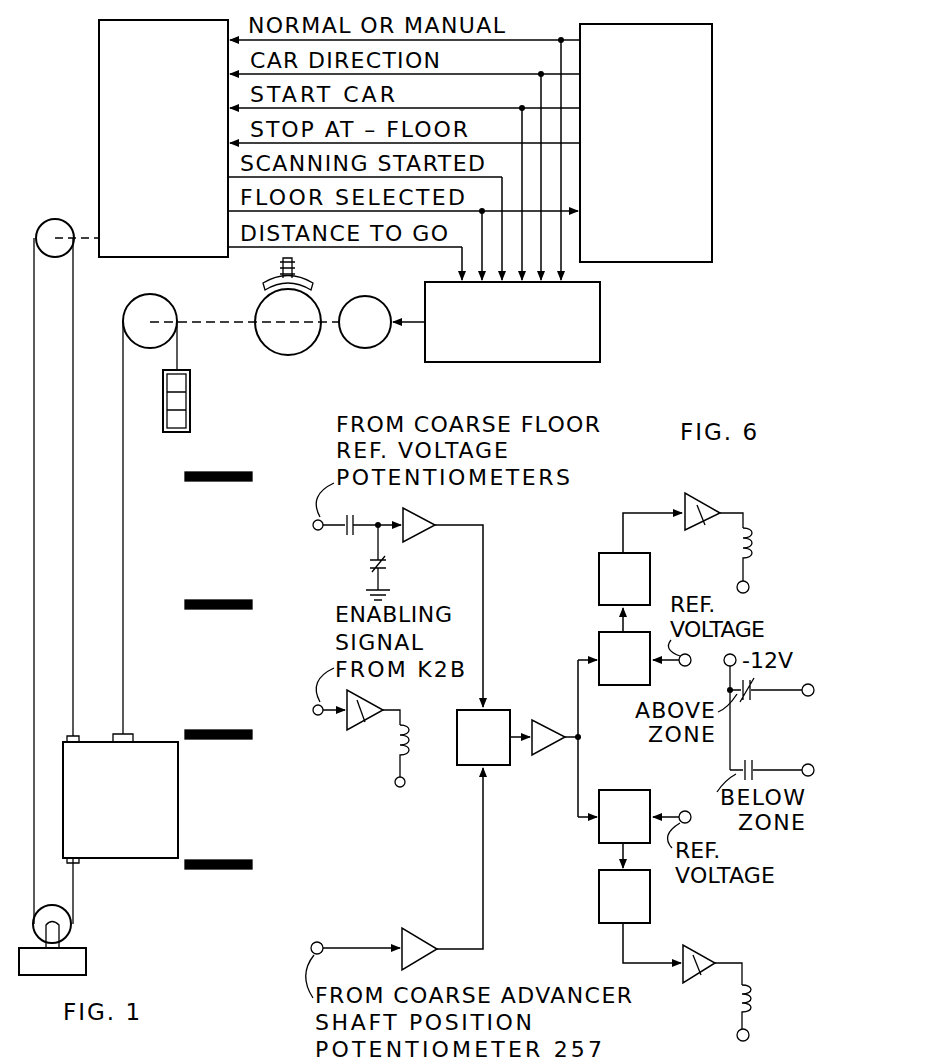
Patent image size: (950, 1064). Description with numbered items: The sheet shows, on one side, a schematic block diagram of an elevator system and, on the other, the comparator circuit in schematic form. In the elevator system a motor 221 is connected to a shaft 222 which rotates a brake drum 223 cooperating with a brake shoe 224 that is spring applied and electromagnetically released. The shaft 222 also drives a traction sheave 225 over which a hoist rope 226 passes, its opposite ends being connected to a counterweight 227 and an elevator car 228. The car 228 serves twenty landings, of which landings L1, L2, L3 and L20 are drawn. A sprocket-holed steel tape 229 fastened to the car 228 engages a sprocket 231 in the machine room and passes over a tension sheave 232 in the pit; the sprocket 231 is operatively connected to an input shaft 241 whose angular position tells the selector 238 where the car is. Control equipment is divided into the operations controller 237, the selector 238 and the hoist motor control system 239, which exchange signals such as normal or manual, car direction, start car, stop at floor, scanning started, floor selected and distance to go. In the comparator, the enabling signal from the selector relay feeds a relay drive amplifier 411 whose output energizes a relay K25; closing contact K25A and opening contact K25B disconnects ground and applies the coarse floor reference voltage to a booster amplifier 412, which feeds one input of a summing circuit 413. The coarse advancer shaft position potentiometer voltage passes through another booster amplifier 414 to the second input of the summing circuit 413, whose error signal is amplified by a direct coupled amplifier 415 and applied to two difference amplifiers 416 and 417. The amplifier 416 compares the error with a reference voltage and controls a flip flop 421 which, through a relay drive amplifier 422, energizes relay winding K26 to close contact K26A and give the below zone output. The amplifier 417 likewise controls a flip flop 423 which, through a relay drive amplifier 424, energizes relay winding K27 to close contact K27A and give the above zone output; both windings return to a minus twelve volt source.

In FIG. 1, the motor 221 is at (383, 340).
In FIG. 1, the shaft 222 is at (333, 324).
In FIG. 1, the brake drum 223 is at (283, 354).
In FIG. 1, the brake shoe 224 is at (312, 282).
In FIG. 1, the traction sheave 225 is at (184, 289).
In FIG. 1, the hoist rope 226 is at (123, 527).
In FIG. 1, the counterweight 227 is at (190, 406).
In FIG. 1, the elevator car 228 is at (135, 858).
In FIG. 1, the steel tape 229 is at (73, 448).
In FIG. 1, the sprocket 231 is at (75, 248).
In FIG. 1, the tension sheave 232 is at (72, 926).
In FIG. 1, the operations controller 237 is at (712, 60).
In FIG. 1, the selector 238 is at (97, 53).
In FIG. 1, the hoist motor control system 239 is at (600, 322).
In FIG. 1, the input shaft 241 is at (83, 237).
In FIG. 6, the relay drive amplifier 411 is at (370, 706).
In FIG. 6, the booster amplifier 412 is at (428, 516).
In FIG. 6, the summing circuit 413 is at (489, 706).
In FIG. 6, the booster amplifier 414 is at (433, 926).
In FIG. 6, the direct coupled amplifier 415 is at (556, 709).
In FIG. 6, the difference amplifier 416 is at (598, 823).
In FIG. 6, the difference amplifier 417 is at (598, 641).
In FIG. 6, the flip flop circuit 421 is at (598, 889).
In FIG. 6, the relay drive amplifier 422 is at (697, 952).
In FIG. 6, the flip flop circuit 423 is at (598, 565).
In FIG. 6, the relay drive amplifier 424 is at (703, 502).
In FIG. 6, the relay K25 is at (406, 745).
In FIG. 6, the relay contact K25A is at (345, 537).
In FIG. 6, the relay contact K25B is at (388, 564).
In FIG. 6, the relay winding K26 is at (748, 996).
In FIG. 6, the relay contact K26A is at (775, 757).
In FIG. 6, the relay winding K27 is at (750, 542).
In FIG. 6, the relay contact K27A is at (772, 712).
In FIG. 1, the landing L20 is at (210, 450).
In FIG. 1, the landing L3 is at (212, 578).
In FIG. 1, the landing L2 is at (212, 707).
In FIG. 1, the landing L1 is at (212, 837).